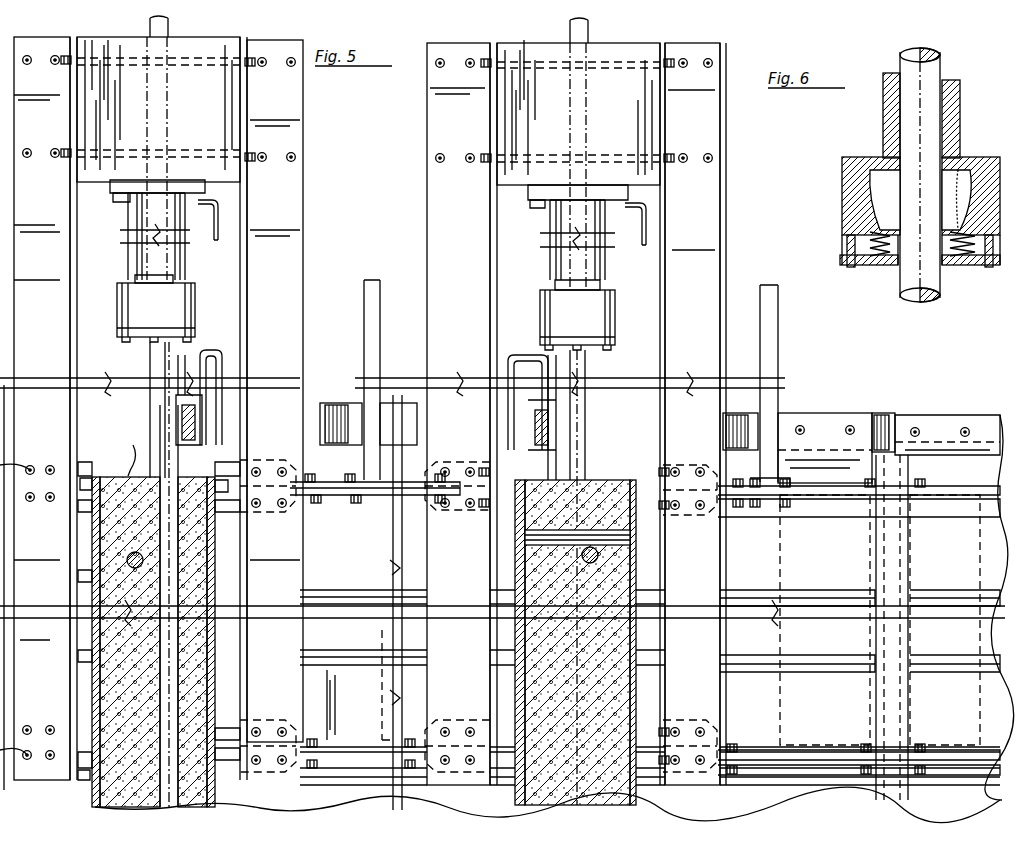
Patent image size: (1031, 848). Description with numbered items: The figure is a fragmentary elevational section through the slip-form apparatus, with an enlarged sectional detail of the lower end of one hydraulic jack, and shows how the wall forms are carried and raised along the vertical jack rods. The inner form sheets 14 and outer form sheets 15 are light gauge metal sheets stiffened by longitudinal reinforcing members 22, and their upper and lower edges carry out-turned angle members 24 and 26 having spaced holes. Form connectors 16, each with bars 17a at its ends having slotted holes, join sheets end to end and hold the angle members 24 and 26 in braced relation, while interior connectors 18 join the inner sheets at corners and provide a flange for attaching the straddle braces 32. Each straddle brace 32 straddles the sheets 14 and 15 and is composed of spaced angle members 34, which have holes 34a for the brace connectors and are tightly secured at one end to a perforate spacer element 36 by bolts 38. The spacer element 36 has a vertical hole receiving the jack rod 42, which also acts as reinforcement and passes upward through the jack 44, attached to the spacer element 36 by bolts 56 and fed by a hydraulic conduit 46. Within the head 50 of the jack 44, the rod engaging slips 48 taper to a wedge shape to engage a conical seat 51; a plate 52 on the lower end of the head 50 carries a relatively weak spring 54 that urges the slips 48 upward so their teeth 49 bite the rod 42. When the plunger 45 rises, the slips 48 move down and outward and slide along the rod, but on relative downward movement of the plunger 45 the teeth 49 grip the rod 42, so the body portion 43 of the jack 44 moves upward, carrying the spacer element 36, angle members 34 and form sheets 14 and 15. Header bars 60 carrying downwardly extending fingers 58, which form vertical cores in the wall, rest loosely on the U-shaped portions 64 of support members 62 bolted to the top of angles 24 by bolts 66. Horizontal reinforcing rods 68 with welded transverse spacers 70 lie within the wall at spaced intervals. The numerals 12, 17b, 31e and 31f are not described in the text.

In FIG. 5, the machine base 12 is at (766, 797).
In FIG. 5, the inner form sheets 14 is at (222, 468).
In FIG. 5, the outer form sheets 15 is at (96, 476).
In FIG. 5, the form connectors 16 is at (910, 590).
In FIG. 5, the bars 17a is at (930, 517).
In FIG. 5, the upper bar 17b is at (935, 478).
In FIG. 5, the interior connectors 18 is at (225, 722).
In FIG. 5, the reinforcing members 22 is at (78, 576).
In FIG. 5, the out-turned angle member 24 is at (80, 508).
In FIG. 5, the out-turned angle member 26 is at (80, 778).
In FIG. 5, the bolt plate 31e is at (470, 730).
In FIG. 5, the bolt plate 31f is at (422, 485).
In FIG. 5, the straddle braces 32 is at (311, 262).
In FIG. 5, the angle members 34 is at (303, 190).
In FIG. 5, the holes 34a is at (50, 466).
In FIG. 5, the spacer element 36 is at (218, 40).
In FIG. 5, the bolts 38 is at (256, 66).
In FIG. 5, the jack rod 42 is at (150, 358).
In FIG. 6, the jack rod 42 is at (900, 305).
In FIG. 5, the body portion 43 is at (128, 258).
In FIG. 5, the jack 44 is at (196, 262).
In FIG. 6, the plunger 45 is at (883, 122).
In FIG. 5, the hydraulic conduit 46 is at (218, 228).
In FIG. 6, the rod engaging slips 48 is at (880, 200).
In FIG. 6, the teeth 49 is at (965, 222).
In FIG. 5, the head 50 is at (615, 312).
In FIG. 6, the head 50 is at (852, 220).
In FIG. 6, the conical seat 51 is at (955, 180).
In FIG. 6, the plate 52 is at (851, 268).
In FIG. 6, the spring 54 is at (988, 268).
In FIG. 5, the bolts 56 is at (118, 203).
In FIG. 5, the fingers 58 is at (826, 416).
In FIG. 5, the header bars 60 is at (326, 432).
In FIG. 5, the support member 62 is at (368, 295).
In FIG. 5, the U-shaped support members 64 is at (222, 355).
In FIG. 5, the bolts 66 is at (365, 508).
In FIG. 5, the horizontal reinforcing rods 68 is at (636, 572).
In FIG. 5, the transverse spacers 70 is at (515, 540).